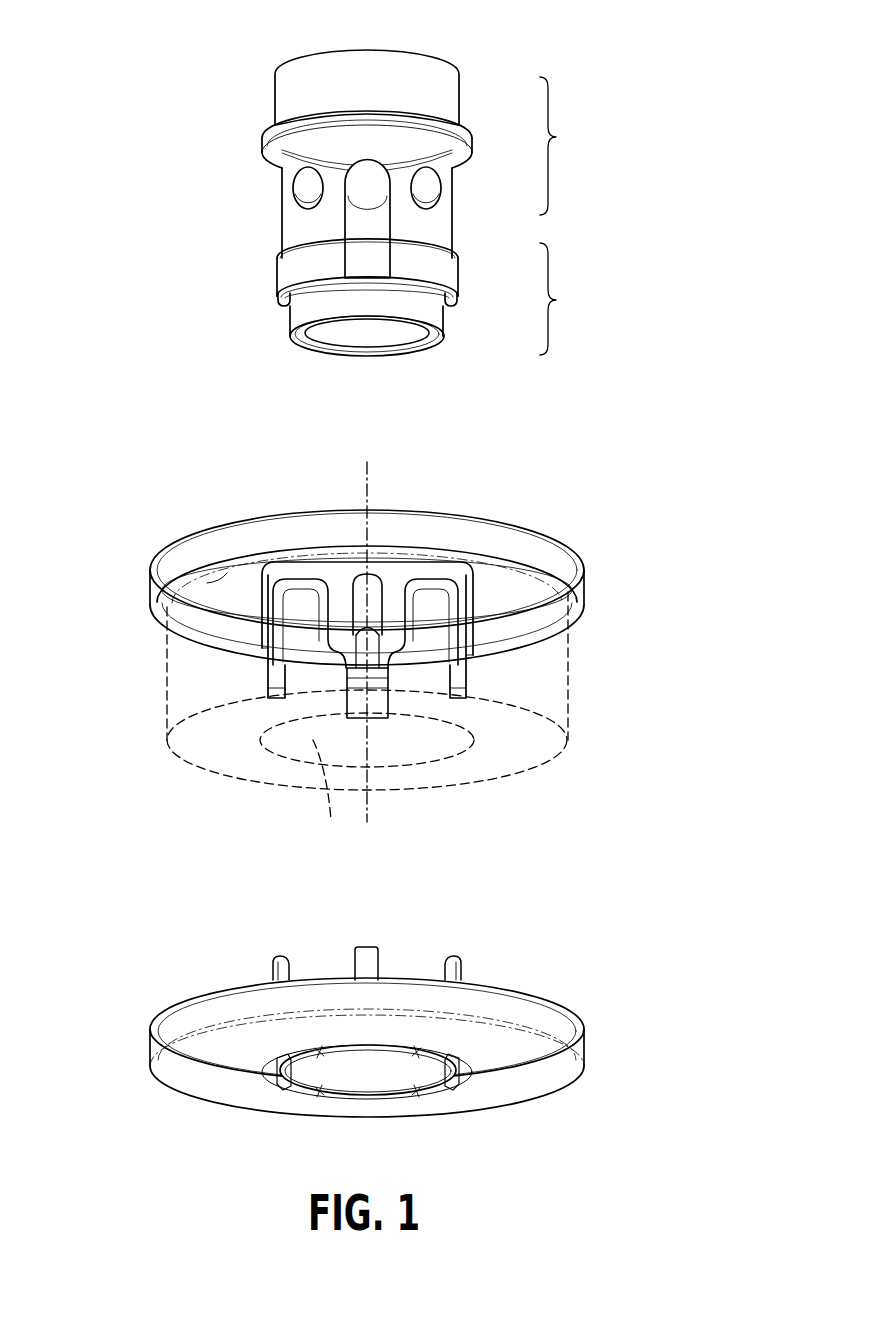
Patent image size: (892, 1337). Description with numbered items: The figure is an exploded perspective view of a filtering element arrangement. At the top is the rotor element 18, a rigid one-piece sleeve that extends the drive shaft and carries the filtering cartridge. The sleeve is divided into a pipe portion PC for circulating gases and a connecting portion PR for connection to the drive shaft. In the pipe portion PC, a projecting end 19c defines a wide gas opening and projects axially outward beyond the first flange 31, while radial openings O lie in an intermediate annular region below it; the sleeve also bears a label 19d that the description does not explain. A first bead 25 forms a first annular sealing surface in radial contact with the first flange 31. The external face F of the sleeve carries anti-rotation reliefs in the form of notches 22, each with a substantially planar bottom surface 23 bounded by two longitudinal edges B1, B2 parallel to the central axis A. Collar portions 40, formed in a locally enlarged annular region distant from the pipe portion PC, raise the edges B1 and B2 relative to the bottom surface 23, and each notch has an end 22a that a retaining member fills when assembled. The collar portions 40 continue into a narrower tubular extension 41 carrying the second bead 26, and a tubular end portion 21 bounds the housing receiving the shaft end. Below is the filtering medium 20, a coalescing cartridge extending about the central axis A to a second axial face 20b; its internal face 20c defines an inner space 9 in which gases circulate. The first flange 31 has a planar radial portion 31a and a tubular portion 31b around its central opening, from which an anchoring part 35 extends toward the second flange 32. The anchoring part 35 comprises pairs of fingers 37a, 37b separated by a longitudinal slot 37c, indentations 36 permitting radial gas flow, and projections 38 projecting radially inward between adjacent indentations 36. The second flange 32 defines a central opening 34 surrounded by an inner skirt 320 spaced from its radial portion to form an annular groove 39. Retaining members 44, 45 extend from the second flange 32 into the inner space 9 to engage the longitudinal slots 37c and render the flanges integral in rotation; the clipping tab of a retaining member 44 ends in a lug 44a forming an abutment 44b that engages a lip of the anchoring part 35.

The rotor element 18 is at (492, 50).
The projecting end 19c is at (305, 62).
The flange 19d is at (268, 130).
The first bead 25 is at (290, 156).
The radial openings O is at (317, 186).
The external face F is at (282, 231).
The longitudinal edge B1 is at (352, 252).
The longitudinal edge B2 is at (392, 223).
The notches 22 is at (367, 236).
The bottom surface 23 is at (363, 268).
The collar portions 40 is at (443, 266).
The end of the notch 22a is at (283, 297).
The second bead 26 is at (298, 315).
The tubular end portion 21 is at (418, 356).
The tubular extension 41 is at (444, 337).
The pipe portion PC is at (565, 146).
The connecting portion PR is at (566, 299).
The first flange 31 is at (587, 567).
The radial portion 31a is at (165, 596).
The tubular portion 31b is at (440, 572).
The filtering medium 20 is at (166, 746).
The second axial face 20b is at (521, 748).
The internal face 20c is at (331, 791).
The inner space 9 is at (440, 740).
The central axis A is at (373, 810).
The anchoring part 35 is at (464, 626).
The indentations 36 is at (307, 670).
The finger 37a is at (342, 625).
The finger 37b is at (393, 623).
The longitudinal slot 37c is at (363, 610).
The projection 38 is at (267, 678).
The second flange 32 is at (588, 1054).
The inner skirt 320 is at (343, 1096).
The central opening 34 is at (388, 1074).
The annular groove 39 is at (277, 1069).
The retaining members 44 is at (272, 968).
The lug 44a is at (450, 973).
The abutment 44b is at (312, 948).
The retaining member 45 is at (367, 947).